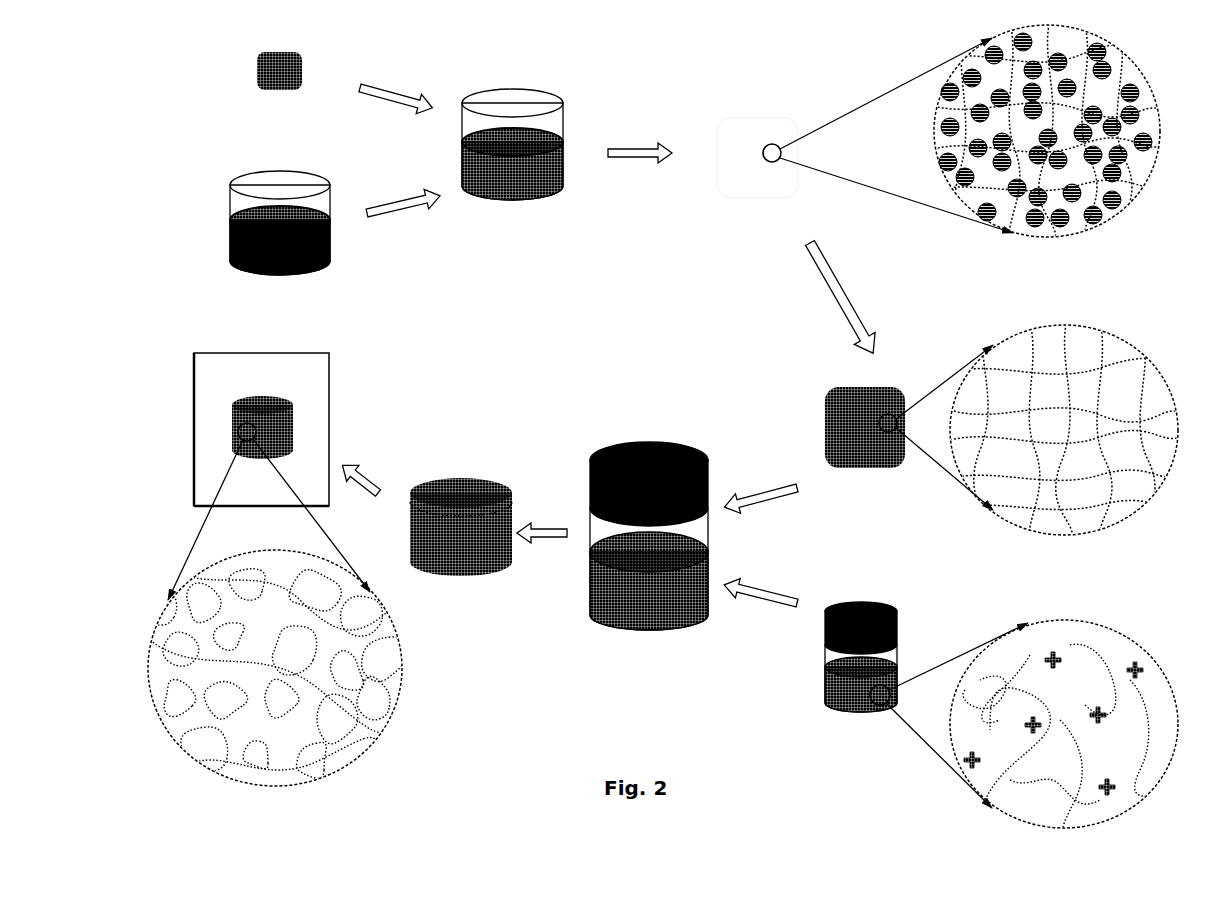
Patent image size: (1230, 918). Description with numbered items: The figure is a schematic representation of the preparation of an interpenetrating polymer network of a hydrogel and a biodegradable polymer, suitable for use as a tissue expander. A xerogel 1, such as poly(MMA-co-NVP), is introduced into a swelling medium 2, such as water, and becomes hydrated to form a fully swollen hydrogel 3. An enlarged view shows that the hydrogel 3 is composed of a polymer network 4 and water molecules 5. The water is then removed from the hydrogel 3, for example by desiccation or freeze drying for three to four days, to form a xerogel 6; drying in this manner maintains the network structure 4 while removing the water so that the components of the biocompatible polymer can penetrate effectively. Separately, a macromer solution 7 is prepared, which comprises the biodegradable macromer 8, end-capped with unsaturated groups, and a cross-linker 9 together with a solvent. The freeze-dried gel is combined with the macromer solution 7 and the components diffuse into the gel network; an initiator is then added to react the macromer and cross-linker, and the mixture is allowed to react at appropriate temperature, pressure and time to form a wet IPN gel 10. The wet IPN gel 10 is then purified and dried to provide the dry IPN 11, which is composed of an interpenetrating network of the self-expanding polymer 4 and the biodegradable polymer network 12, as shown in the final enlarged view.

The xerogel 1 is at (279, 87).
The swelling medium 2 is at (280, 245).
The fully swollen hydrogel 3 is at (757, 176).
The polymer network 4 is at (1130, 155).
The water molecules 5 is at (1118, 200).
The xerogel 6 is at (865, 447).
The macromer solution 7 is at (861, 675).
The biodegradable macromer 8 is at (1087, 640).
The cross-linker 9 is at (1138, 667).
The wet IPN gel 10 is at (461, 545).
The dry IPN 11 is at (261, 429).
The biodegradable polymer network 12 is at (320, 758).